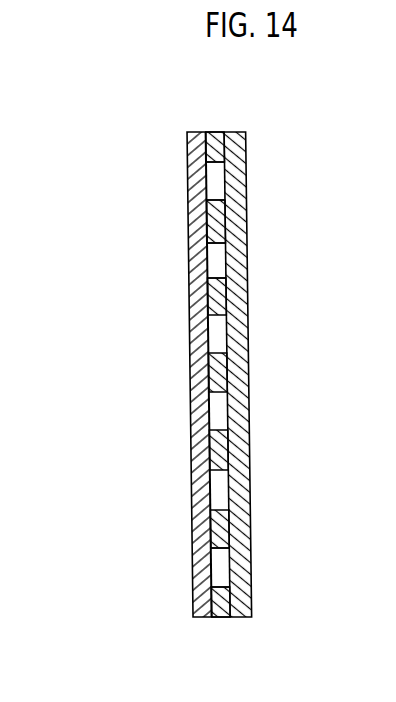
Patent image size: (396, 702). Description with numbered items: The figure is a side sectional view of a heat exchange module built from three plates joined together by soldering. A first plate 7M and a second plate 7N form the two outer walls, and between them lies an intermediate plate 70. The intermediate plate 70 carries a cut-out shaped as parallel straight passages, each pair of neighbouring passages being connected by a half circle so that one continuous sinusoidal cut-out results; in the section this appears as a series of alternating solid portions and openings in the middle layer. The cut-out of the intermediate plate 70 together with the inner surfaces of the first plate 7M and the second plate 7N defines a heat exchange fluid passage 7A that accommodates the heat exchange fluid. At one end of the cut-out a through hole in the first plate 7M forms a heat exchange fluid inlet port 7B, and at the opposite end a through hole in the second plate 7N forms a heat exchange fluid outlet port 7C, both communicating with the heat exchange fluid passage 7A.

The intermediate plate 70 is at (248, 370).
The first plate 7M is at (188, 282).
The second plate 7N is at (250, 492).
The heat exchange fluid passage 7A is at (247, 268).
The heat exchange fluid inlet port 7B is at (208, 560).
The heat exchange fluid outlet port 7C is at (228, 185).